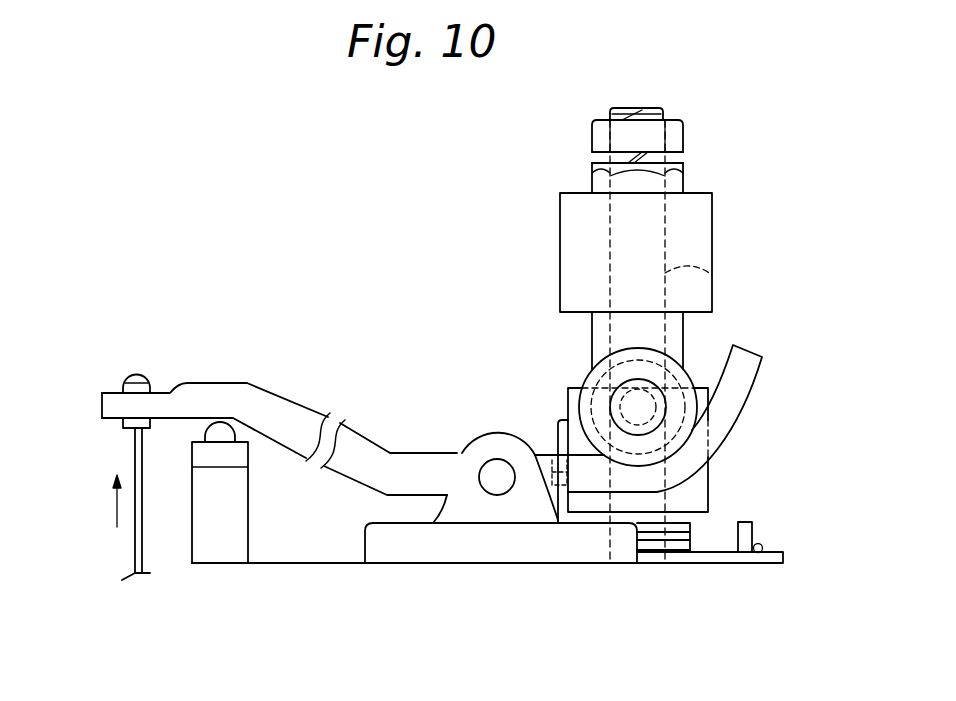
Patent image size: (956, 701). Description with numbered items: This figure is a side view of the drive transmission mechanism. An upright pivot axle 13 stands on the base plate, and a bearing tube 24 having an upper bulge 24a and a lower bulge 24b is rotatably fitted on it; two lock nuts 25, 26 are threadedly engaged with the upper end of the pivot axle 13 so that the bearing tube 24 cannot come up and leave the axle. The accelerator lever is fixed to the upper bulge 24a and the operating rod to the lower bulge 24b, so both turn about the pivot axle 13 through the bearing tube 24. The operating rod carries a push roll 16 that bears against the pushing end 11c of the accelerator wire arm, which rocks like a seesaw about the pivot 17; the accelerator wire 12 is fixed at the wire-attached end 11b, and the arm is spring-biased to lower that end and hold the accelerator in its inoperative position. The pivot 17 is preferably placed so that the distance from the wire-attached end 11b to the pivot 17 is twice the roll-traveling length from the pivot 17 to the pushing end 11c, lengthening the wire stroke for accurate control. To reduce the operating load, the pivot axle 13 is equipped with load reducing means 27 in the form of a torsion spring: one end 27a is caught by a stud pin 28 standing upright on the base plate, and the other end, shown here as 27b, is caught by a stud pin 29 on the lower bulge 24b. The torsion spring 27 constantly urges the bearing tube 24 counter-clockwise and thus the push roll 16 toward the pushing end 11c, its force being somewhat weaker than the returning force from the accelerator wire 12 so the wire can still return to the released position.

The wire-attached end 11b is at (172, 398).
The pushing end 11c is at (737, 397).
The accelerator wire 12 is at (133, 542).
The pivot axle 13 is at (626, 107).
The push roll 16 is at (598, 390).
The pivot 17 is at (499, 478).
The bearing tube 24 is at (675, 327).
The upper bulge 24a is at (713, 222).
The lower bulge 24b is at (707, 480).
The lock nut 25 is at (675, 178).
The lock nut 26 is at (678, 128).
The load reducing means 27 is at (673, 540).
The one end of torsion spring 27a is at (765, 548).
The pin 27b is at (560, 423).
The stud pin 28 is at (752, 530).
The stud pin 29 is at (548, 462).